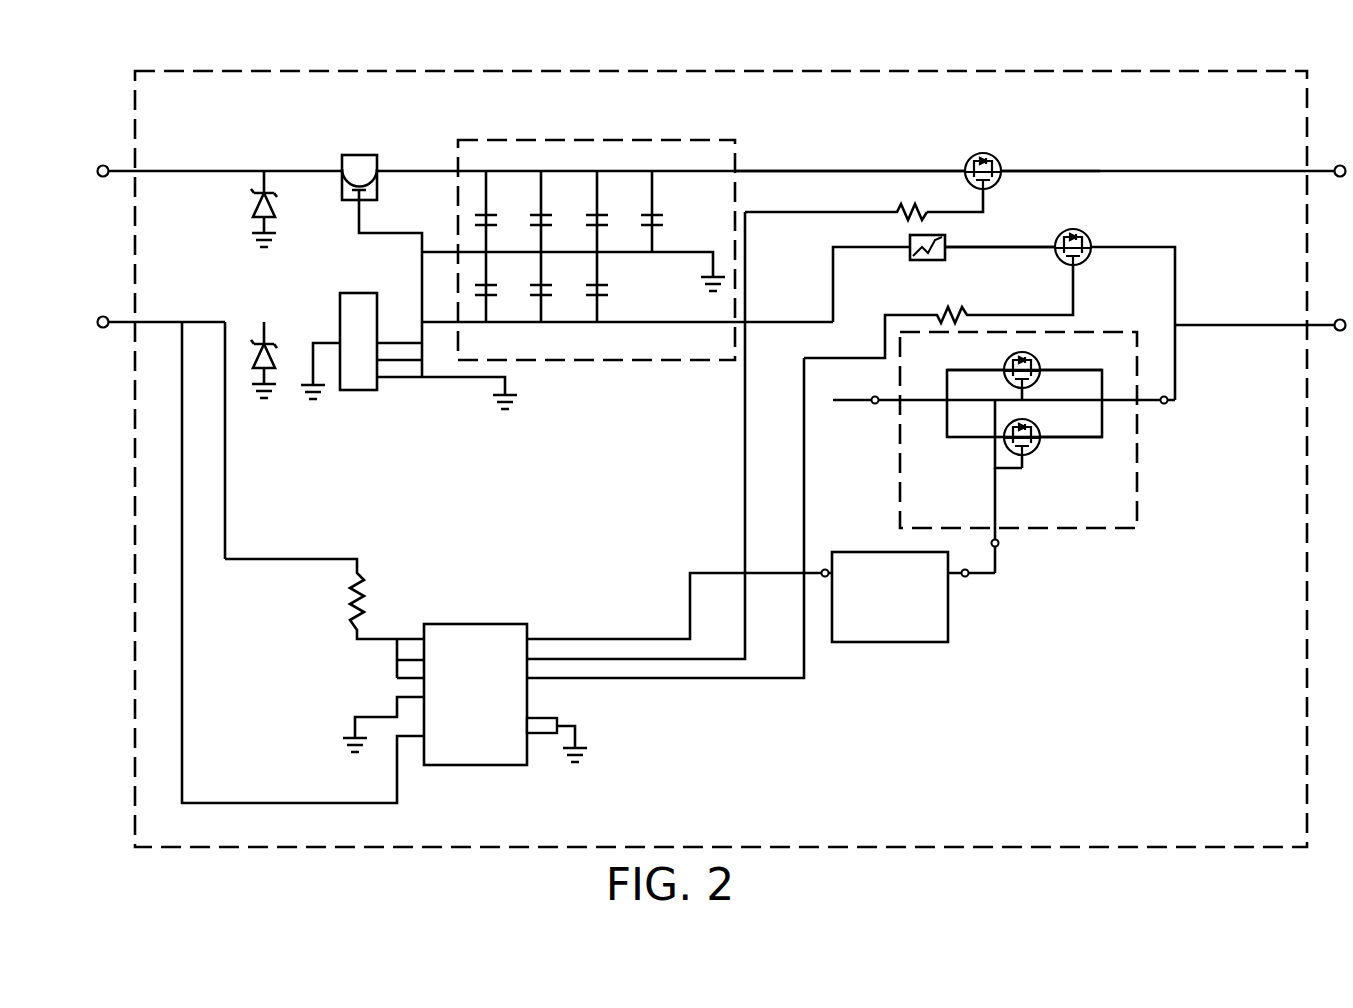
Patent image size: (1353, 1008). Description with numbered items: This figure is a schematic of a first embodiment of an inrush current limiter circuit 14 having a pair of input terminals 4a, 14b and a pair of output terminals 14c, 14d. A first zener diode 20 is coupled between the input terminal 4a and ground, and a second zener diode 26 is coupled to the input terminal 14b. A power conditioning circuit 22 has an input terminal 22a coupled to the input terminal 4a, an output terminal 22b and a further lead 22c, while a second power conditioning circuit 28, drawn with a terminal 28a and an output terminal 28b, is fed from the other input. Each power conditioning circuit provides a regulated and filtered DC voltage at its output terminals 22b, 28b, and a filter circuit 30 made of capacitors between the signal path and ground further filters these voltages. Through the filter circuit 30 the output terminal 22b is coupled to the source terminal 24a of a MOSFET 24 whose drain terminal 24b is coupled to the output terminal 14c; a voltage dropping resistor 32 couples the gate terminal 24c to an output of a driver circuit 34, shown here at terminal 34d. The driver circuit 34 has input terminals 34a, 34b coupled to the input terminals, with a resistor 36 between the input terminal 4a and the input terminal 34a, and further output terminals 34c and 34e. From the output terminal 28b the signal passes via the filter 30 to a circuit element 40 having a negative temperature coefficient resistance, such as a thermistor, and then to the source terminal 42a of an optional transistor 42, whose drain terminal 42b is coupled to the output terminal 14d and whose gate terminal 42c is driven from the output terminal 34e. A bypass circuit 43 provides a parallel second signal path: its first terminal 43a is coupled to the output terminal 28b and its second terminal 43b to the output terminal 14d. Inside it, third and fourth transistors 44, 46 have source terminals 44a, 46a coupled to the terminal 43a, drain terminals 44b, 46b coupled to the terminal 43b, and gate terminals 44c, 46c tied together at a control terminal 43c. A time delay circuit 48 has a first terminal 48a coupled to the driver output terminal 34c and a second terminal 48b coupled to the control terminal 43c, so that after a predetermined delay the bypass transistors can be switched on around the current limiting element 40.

The current limiter circuit 14 is at (1078, 68).
The input terminal 4a is at (122, 168).
The input terminal 14b is at (122, 320).
The output terminal 14c is at (1312, 168).
The output terminal 14d is at (1312, 324).
The first zener diode 20 is at (278, 230).
The power conditioning circuit 22 is at (363, 148).
The input terminal of power conditioning circuit 22a is at (322, 168).
The output terminal of power conditioning circuit 22b is at (400, 165).
The fuse sense lead 22c is at (360, 227).
The metal oxide semiconductor field effect transistor 24 is at (993, 150).
The source terminal 24a is at (950, 168).
The drain terminal 24b is at (1030, 167).
The gate terminal 24c is at (990, 205).
The second zener diode 26 is at (260, 376).
The second power conditioning circuit 28 is at (339, 290).
The power conditioning circuit ground lead 28a is at (332, 318).
The output terminal of second power conditioning circuit 28b is at (402, 320).
The filter circuit 30 is at (645, 140).
The voltage dropping resistor 32 is at (895, 210).
The driver circuit 34 is at (478, 783).
The driver circuit input terminal 34a is at (387, 636).
The driver circuit input terminal 34b is at (376, 805).
The driver circuit output terminal 34c is at (538, 637).
The driver circuit output 34d is at (577, 656).
The second output terminal of driver circuit 34e is at (595, 680).
The resistor 36 is at (366, 578).
The first circuit element 40 is at (908, 240).
The optional transistor 42 is at (1083, 227).
The source terminal 42a is at (1040, 245).
The drain terminal 42b is at (1125, 245).
The gate terminal 42c is at (1078, 292).
The bypass circuit 43 is at (1140, 495).
The first terminal of bypass circuit 43a is at (873, 405).
The second terminal of bypass circuit 43b is at (1167, 403).
The control terminal of bypass circuit 43c is at (999, 543).
The third transistor 44 is at (1037, 350).
The source terminal 44a is at (990, 368).
The drain terminal 44b is at (1055, 368).
The gate terminal 44c is at (1024, 399).
The fourth transistor 46 is at (1038, 425).
The source terminal 46a is at (995, 432).
The drain terminal 46b is at (1049, 443).
The gate terminal 46c is at (1024, 470).
The time delay circuit 48 is at (915, 645).
The first terminal of time delay circuit 48a is at (824, 580).
The second terminal of time delay circuit 48b is at (968, 578).